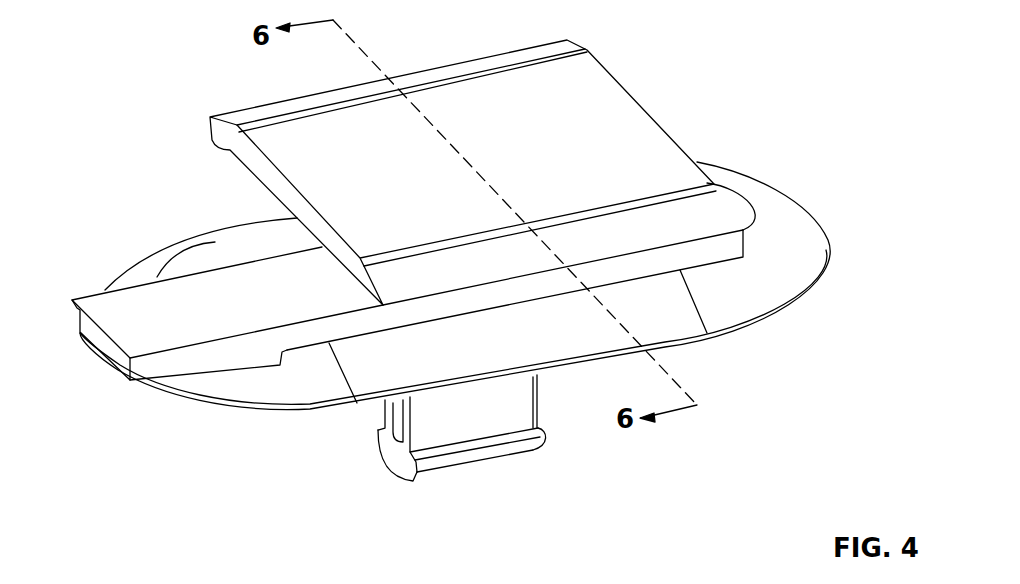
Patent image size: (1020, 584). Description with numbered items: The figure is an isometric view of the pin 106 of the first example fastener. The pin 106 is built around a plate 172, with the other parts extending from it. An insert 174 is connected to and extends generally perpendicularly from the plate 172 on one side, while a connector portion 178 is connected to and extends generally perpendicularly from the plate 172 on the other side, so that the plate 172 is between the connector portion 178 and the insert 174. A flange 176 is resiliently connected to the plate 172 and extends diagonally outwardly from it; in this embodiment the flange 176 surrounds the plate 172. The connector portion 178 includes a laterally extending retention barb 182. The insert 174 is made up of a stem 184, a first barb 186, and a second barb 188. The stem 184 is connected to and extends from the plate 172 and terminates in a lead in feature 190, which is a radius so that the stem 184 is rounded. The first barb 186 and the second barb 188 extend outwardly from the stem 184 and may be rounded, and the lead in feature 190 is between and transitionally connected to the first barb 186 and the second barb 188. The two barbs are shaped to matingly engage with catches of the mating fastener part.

The pin 106 is at (123, 47).
The plate 172 is at (237, 247).
The insert 174 is at (527, 390).
The flange 176 is at (800, 223).
The connector portion 178 is at (275, 143).
The retention barb 182 is at (107, 310).
The stem 184 is at (457, 417).
The first barb 186 is at (510, 450).
The second barb 188 is at (373, 435).
The lead in feature 190 is at (407, 473).